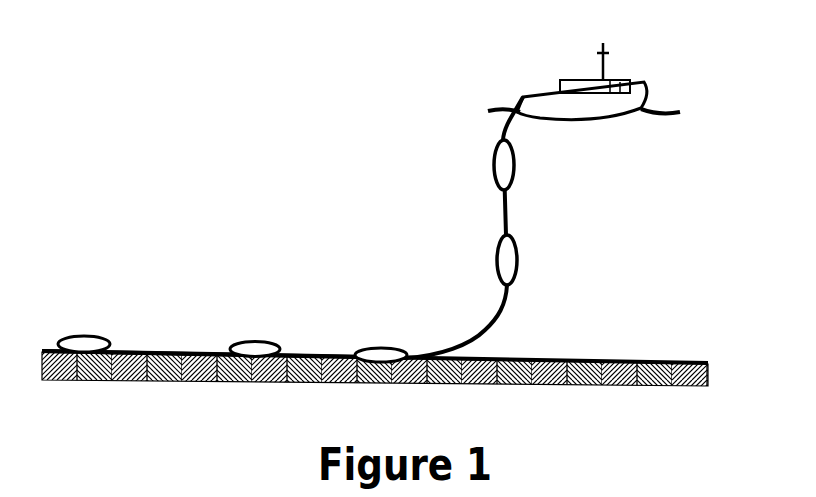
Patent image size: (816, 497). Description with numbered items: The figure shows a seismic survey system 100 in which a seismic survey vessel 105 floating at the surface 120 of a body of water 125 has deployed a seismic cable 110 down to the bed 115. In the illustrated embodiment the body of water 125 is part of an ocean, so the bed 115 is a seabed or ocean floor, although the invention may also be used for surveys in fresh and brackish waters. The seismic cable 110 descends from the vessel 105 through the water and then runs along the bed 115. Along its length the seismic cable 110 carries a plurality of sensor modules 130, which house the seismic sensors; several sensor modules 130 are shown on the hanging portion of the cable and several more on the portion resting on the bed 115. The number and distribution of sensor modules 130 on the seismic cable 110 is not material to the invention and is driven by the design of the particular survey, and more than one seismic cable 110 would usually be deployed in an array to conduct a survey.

The seismic survey system 100 is at (273, 70).
The seismic survey vessel 105 is at (557, 87).
The seismic cable 110 is at (482, 325).
The bed 115 is at (605, 363).
The surface 120 is at (673, 108).
The body of water 125 is at (625, 219).
The sensor modules 130 is at (492, 160).